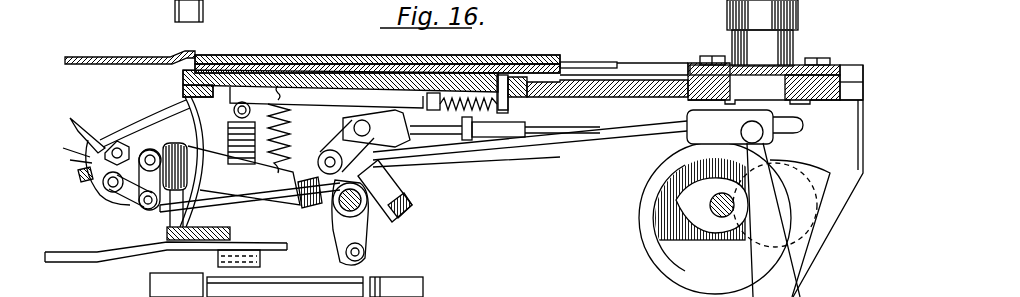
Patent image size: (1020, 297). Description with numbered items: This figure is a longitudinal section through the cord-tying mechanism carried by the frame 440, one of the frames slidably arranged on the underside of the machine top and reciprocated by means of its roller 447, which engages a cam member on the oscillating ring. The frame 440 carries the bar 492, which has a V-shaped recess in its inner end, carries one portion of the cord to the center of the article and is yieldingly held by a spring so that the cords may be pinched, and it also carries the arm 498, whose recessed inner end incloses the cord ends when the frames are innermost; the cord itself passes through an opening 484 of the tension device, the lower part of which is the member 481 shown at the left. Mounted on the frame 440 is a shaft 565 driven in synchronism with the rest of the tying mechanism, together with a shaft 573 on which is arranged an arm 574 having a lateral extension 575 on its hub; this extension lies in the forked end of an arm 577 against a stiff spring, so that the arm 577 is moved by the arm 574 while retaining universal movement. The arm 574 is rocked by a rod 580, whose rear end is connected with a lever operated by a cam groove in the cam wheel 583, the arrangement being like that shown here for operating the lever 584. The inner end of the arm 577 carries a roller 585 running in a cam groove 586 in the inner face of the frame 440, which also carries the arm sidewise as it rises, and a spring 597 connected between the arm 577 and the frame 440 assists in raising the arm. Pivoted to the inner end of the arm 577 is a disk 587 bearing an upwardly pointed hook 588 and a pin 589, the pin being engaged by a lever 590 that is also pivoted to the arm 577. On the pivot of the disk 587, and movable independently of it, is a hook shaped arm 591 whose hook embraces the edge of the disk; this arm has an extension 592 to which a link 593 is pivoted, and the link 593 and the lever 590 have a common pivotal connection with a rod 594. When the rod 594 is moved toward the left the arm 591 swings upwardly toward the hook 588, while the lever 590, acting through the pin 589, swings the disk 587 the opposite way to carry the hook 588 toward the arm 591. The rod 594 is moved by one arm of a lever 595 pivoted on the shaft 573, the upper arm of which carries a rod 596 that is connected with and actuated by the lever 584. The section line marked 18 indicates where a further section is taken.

The bar 492 is at (143, 58).
The spring 597 is at (300, 100).
The cam groove 586 is at (185, 100).
The hook 588 is at (88, 130).
The arm 498 is at (105, 136).
The roller 585 is at (183, 140).
The pin 589 is at (140, 150).
The disk 587 is at (88, 150).
The hook shaped arm 591 is at (84, 176).
The extension 592 is at (100, 188).
The lever 590 is at (140, 202).
The link 593 is at (140, 209).
The rod 594 is at (183, 240).
The opening 484 is at (215, 264).
The plate 481 is at (73, 259).
The arm 577 is at (250, 177).
The arm 574 is at (459, 142).
The lateral extension 575 is at (312, 243).
The shaft 573 is at (362, 218).
The lever 595 is at (364, 255).
The section line 18- 18 is at (429, 191).
The rod 596 is at (510, 146).
The rod 580 is at (584, 136).
The shaft 565 is at (712, 207).
The cam wheel 583 is at (662, 259).
The lever 584 is at (770, 261).
The frame 440 is at (686, 80).
The roller 447 is at (800, 14).